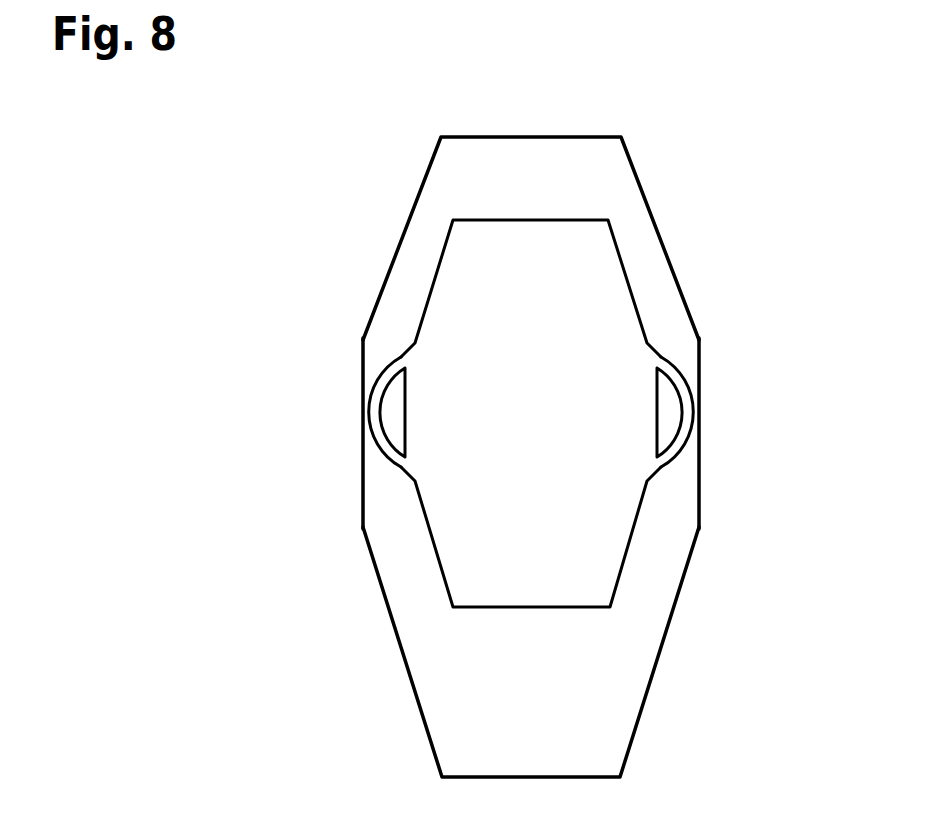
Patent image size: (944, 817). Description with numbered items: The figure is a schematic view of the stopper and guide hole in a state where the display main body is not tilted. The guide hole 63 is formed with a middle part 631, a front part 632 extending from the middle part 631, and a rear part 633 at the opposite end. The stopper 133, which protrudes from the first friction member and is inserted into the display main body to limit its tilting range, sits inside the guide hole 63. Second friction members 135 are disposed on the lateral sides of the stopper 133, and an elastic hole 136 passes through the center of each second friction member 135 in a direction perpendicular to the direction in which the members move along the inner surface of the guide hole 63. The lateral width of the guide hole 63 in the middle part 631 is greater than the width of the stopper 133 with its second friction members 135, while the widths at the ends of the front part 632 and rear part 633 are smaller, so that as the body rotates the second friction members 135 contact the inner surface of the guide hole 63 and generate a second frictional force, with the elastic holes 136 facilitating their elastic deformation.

The guide hole 63 is at (178, 225).
The middle part 631 is at (361, 435).
The front part 632 is at (405, 653).
The rear part 633 is at (400, 240).
The stopper 133 is at (605, 530).
The second friction member 135 is at (683, 365).
The elastic hole 136 is at (683, 450).